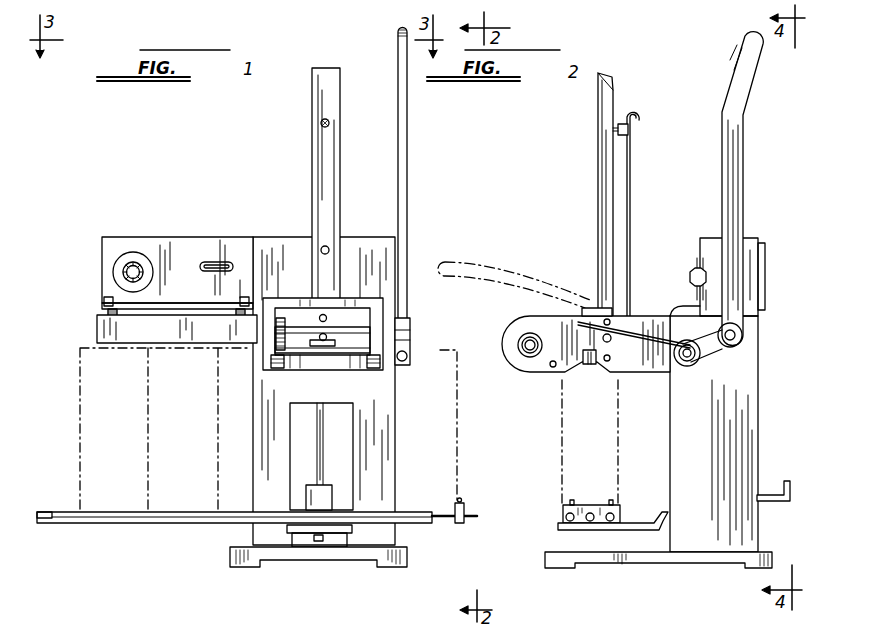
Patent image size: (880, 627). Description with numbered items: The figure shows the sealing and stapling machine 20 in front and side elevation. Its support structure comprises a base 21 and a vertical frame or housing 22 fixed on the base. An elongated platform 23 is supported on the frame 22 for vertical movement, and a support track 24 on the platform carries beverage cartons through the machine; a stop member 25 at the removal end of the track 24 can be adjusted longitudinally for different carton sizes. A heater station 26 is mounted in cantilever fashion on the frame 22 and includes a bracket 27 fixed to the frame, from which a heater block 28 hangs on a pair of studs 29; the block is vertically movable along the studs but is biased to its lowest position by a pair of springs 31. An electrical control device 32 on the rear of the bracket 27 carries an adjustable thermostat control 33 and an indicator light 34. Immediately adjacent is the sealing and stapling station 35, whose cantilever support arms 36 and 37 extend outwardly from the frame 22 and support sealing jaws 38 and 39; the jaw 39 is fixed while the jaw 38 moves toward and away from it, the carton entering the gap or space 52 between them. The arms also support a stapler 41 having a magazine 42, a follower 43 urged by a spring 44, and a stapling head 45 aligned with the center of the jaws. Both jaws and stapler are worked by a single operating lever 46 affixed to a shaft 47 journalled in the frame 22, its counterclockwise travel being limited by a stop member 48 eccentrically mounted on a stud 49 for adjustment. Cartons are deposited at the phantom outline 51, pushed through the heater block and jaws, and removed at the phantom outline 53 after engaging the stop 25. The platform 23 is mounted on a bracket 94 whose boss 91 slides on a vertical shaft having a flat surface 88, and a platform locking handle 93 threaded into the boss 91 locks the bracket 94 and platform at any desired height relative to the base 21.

In FIG. 1, the sealing and stapling machine 20 is at (245, 195).
In FIG. 2, the sealing and stapling machine 20 is at (676, 230).
In FIG. 1, the base 21 is at (238, 556).
In FIG. 2, the base 21 is at (647, 560).
In FIG. 1, the vertical frame or housing 22 is at (385, 433).
In FIG. 2, the vertical frame or housing 22 is at (758, 426).
In FIG. 1, the elongated platform 23 is at (418, 526).
In FIG. 2, the elongated platform 23 is at (638, 522).
In FIG. 1, the support track 24 is at (450, 522).
In FIG. 2, the support track 24 is at (570, 526).
In FIG. 1, the stop member 25 is at (465, 506).
In FIG. 2, the stop member 25 is at (596, 505).
In FIG. 1, the heater station 26 is at (95, 270).
In FIG. 1, the bracket 27 is at (173, 303).
In FIG. 1, the heater block 28 is at (97, 330).
In FIG. 1, the studs 29 is at (104, 301).
In FIG. 1, the springs 31 is at (117, 313).
In FIG. 1, the electrical control device 32 is at (174, 240).
In FIG. 1, the adjustable thermostat control 33 is at (133, 262).
In FIG. 1, the indicator light 34 is at (215, 262).
In FIG. 1, the sealing and stapling station 35 is at (382, 308).
In FIG. 2, the sealing and stapling station 35 is at (579, 297).
In FIG. 1, the cantilever support arm 36 is at (375, 368).
In FIG. 2, the cantilever support arm 36 is at (532, 373).
In FIG. 1, the cantilever support arm 37 is at (276, 370).
In FIG. 2, the sealing jaw 38 is at (585, 370).
In FIG. 2, the sealing jaw 39 is at (599, 372).
In FIG. 2, the stapler 41 is at (618, 296).
In FIG. 1, the magazine 42 is at (328, 183).
In FIG. 2, the magazine 42 is at (598, 172).
In FIG. 2, the follower 43 is at (628, 133).
In FIG. 2, the spring 44 is at (631, 240).
In FIG. 2, the stapling head 45 is at (640, 315).
In FIG. 1, the operating lever 46 is at (407, 190).
In FIG. 2, the operating lever 46 is at (743, 196).
In FIG. 2, the shaft 47 is at (733, 347).
In FIG. 1, the stop member 48 is at (407, 358).
In FIG. 2, the stop member 48 is at (687, 366).
In FIG. 1, the stud 49 is at (412, 345).
In FIG. 2, the stud 49 is at (695, 366).
In FIG. 1, the phantom outline 51 is at (70, 408).
In FIG. 2, the gap or space 52 is at (592, 368).
In FIG. 1, the phantom outline 53 is at (460, 438).
In FIG. 1, the flat surface 88 is at (323, 460).
In FIG. 1, the boss 91 is at (320, 500).
In FIG. 2, the platform locking handle 93 is at (770, 495).
In FIG. 1, the bracket 94 is at (334, 528).
In FIG. 2, the bracket 94 is at (655, 531).